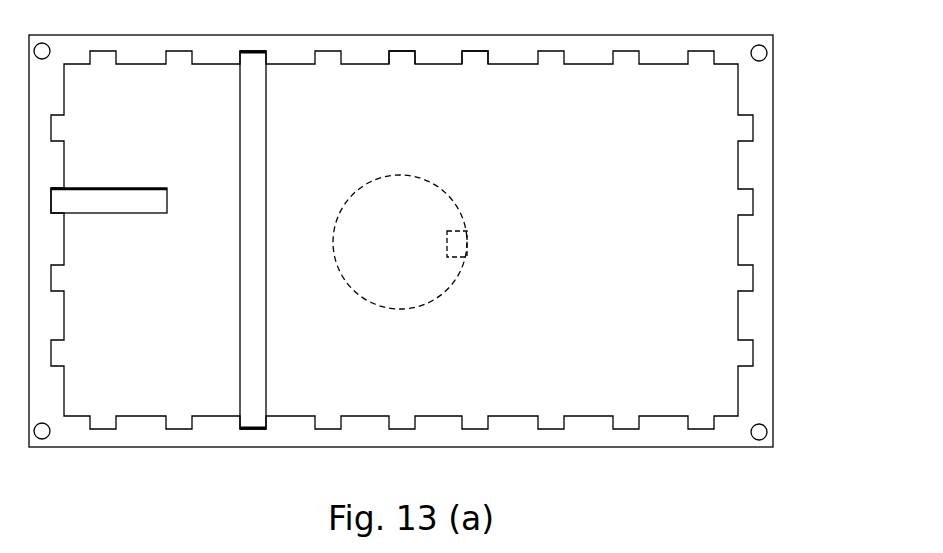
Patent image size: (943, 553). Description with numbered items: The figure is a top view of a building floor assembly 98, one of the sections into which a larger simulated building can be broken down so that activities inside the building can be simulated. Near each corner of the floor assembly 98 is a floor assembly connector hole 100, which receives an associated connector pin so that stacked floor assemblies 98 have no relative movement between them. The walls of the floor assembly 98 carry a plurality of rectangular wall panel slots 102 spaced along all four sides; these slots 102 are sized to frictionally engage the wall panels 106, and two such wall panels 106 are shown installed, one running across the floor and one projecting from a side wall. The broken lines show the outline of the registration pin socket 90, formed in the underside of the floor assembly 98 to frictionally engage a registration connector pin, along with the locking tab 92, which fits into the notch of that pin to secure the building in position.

The registration pin socket 90 is at (453, 201).
The locking tab 92 is at (460, 243).
The building floor assembly 98 is at (775, 252).
The floor assembly connector hole 100 is at (764, 52).
The wall panel slots 102 is at (475, 67).
The wall panels 106 is at (240, 103).